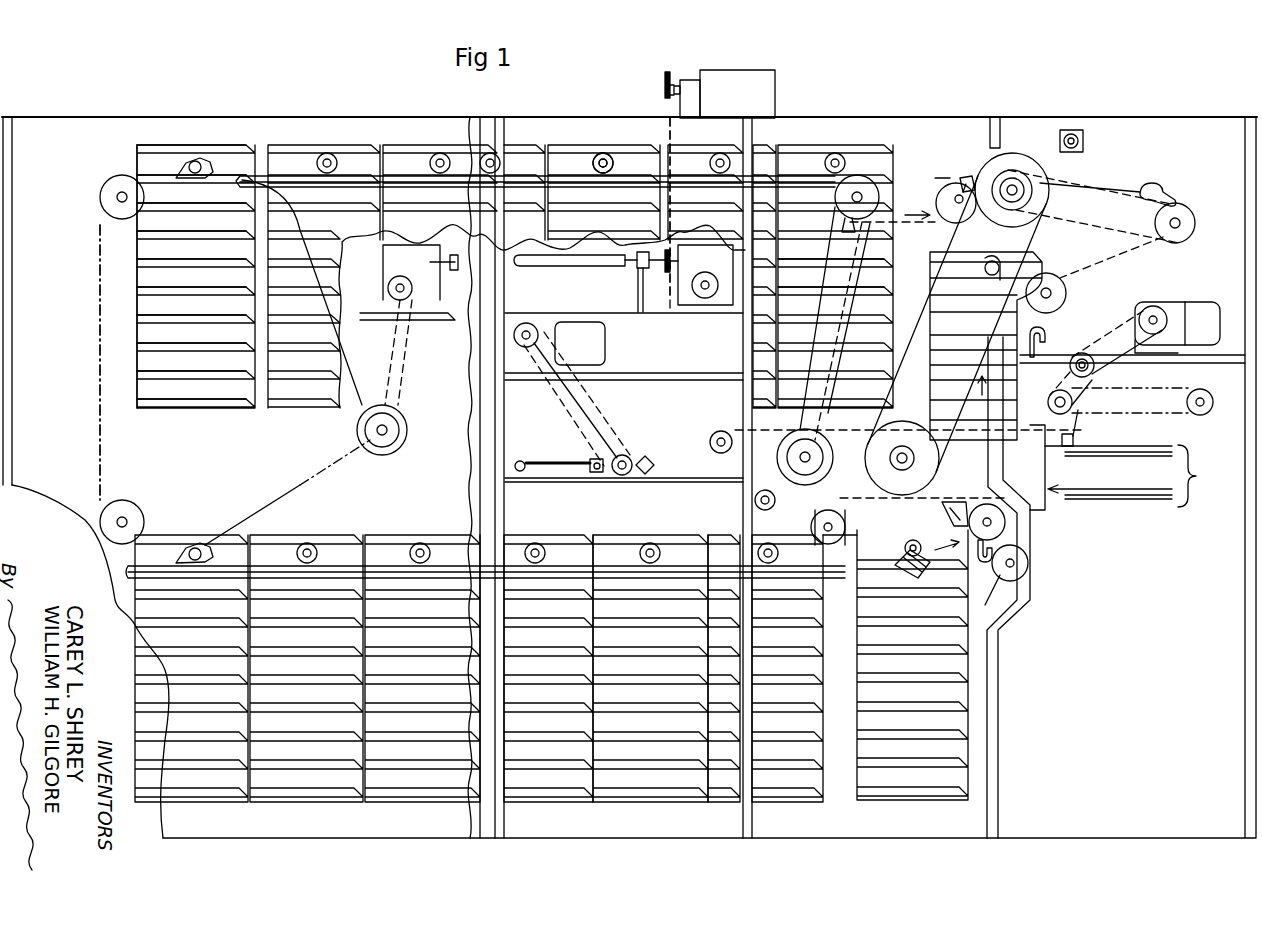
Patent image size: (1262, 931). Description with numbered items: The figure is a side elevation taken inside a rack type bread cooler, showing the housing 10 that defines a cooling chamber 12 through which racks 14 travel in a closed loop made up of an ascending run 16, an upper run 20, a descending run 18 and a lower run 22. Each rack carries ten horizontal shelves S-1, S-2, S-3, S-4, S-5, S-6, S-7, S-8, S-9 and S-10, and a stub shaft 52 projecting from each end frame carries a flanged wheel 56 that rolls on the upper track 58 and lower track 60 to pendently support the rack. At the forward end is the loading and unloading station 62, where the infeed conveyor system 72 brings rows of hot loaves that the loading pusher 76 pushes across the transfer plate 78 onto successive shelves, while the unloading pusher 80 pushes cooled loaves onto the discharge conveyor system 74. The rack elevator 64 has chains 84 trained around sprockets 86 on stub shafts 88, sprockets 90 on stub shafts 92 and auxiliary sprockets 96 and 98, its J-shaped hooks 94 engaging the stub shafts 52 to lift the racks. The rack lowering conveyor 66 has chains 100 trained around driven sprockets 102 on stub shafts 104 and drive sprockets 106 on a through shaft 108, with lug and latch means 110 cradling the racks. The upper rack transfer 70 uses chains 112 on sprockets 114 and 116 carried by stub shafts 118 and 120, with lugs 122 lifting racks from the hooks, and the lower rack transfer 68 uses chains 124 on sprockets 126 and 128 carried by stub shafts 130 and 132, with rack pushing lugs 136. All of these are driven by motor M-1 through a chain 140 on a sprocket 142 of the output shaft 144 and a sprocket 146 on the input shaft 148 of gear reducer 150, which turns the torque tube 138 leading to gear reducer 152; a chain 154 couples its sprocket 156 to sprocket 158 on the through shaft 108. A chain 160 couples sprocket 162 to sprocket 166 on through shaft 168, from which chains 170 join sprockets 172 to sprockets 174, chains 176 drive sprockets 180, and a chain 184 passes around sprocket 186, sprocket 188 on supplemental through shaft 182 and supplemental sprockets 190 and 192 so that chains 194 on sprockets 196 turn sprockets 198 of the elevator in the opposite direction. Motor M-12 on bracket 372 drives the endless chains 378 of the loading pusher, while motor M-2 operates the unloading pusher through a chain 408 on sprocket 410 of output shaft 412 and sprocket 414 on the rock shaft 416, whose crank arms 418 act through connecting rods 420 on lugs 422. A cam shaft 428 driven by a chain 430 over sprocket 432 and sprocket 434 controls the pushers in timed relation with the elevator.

The housing 10 is at (338, 117).
The cooling chamber 12 is at (382, 128).
The racks 14 is at (232, 145).
The ascending run 16 is at (1004, 237).
The descending run 18 is at (92, 390).
The upper longitudinally extending run 20 is at (798, 178).
The lower longitudinally extending run 22 is at (158, 562).
The stub shaft 52 is at (603, 153).
The flanged wheel 56 is at (603, 160).
The upper track 58 is at (640, 175).
The lower track 60 is at (385, 560).
The loading and unloading station 62 is at (1204, 476).
The rack elevator 64 is at (1040, 252).
The rack lowering conveyor 66 is at (98, 452).
The lower rack transfer 68 is at (850, 580).
The upper rack transfer 70 is at (944, 172).
The infeed conveyor system 72 is at (1148, 447).
The discharge conveyor system 74 is at (1138, 490).
The loading pusher 76 is at (1088, 436).
The transfer plate 78 is at (825, 450).
The unloading pusher 80 is at (675, 478).
The endless chains 84 is at (1123, 190).
The sprockets 86 is at (1035, 185).
The stub shafts 88 is at (1028, 190).
The sprockets 90 is at (1027, 578).
The stub shafts 92 is at (1029, 563).
The J-shaped hooks 94 is at (1153, 186).
The auxiliary sprocket 96 is at (1185, 237).
The auxiliary sprocket 98 is at (1067, 293).
The endless chains 100 is at (276, 505).
The driven sprockets 102 is at (108, 190).
The stub shafts 104 is at (118, 198).
The drive sprockets 106 is at (392, 440).
The through shaft 108 is at (400, 430).
The lug and latch means 110 is at (200, 537).
The endless chains 112 is at (910, 178).
The rearward drive sprockets 114 is at (856, 194).
The forward driven sprockets 116 is at (962, 178).
The stub shafts 118 is at (866, 186).
The stub shafts 120 is at (957, 206).
The lugs 122 is at (971, 174).
The endless chains 124 is at (882, 575).
The rearward driven sprockets 126 is at (811, 524).
The forward drive sprockets 128 is at (1005, 523).
The stub shafts 130 is at (808, 584).
The stub shafts 132 is at (1005, 528).
The rack pushing lugs 136 is at (925, 566).
The torque tube 138 is at (548, 262).
The chain 140 is at (672, 138).
The sprocket 142 is at (667, 72).
The motor output shaft 144 is at (676, 86).
The sprocket 146 is at (668, 272).
The input shaft 148 is at (680, 262).
The gear reducer 150 is at (700, 306).
The gear reducer 152 is at (422, 270).
The chain 154 is at (400, 400).
The sprocket 156 is at (388, 290).
The sprocket 158 is at (355, 437).
The chain 160 is at (725, 345).
The sprocket 162 is at (718, 291).
The sprocket 166 is at (775, 503).
The through shaft 168 is at (790, 478).
The chains 170 is at (830, 250).
The sprockets 172 is at (838, 360).
The sprockets 174 is at (880, 196).
The chains 176 is at (938, 513).
The sprockets 180 is at (1008, 518).
The supplemental through shaft 182 is at (915, 462).
The chain 184 is at (735, 430).
The sprocket 186 is at (777, 460).
The sprocket 188 is at (893, 428).
The supplemental sprocket 190 is at (710, 438).
The supplemental sprocket 192 is at (756, 506).
The chains 194 is at (936, 297).
The sprockets 196 is at (915, 452).
The sprockets 198 is at (1018, 190).
The bracket 372 is at (1185, 368).
The endless chains 378 is at (1195, 412).
The chain 408 is at (595, 400).
The sprocket 410 is at (526, 348).
The output shaft 412 is at (535, 325).
The sprocket 414 is at (610, 460).
The through rock shaft 416 is at (627, 461).
The crank arms 418 is at (635, 475).
The connecting rods 420 is at (572, 470).
The lugs 422 is at (518, 472).
The cam shaft 428 is at (1086, 140).
The chain 430 is at (1052, 165).
The sprocket 432 is at (1083, 140).
The sprocket 434 is at (1035, 212).
The top shelf S-1 is at (160, 150).
The shelf S-2 is at (170, 177).
The shelf S-3 is at (160, 205).
The shelf S-4 is at (165, 230).
The shelf S-5 is at (160, 255).
The shelf S-6 is at (160, 283).
The shelf S-7 is at (160, 310).
The shelf S-8 is at (150, 335).
The shelf S-9 is at (150, 360).
The bottom shelf S-10 is at (160, 392).
The motor M-1 is at (777, 78).
The gear head reduction motor M-2 is at (597, 352).
The gear head reduction motor M-12 is at (1205, 310).